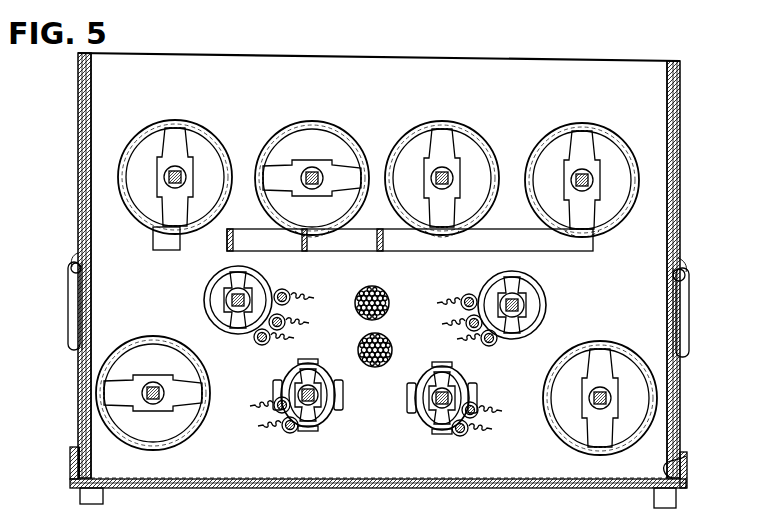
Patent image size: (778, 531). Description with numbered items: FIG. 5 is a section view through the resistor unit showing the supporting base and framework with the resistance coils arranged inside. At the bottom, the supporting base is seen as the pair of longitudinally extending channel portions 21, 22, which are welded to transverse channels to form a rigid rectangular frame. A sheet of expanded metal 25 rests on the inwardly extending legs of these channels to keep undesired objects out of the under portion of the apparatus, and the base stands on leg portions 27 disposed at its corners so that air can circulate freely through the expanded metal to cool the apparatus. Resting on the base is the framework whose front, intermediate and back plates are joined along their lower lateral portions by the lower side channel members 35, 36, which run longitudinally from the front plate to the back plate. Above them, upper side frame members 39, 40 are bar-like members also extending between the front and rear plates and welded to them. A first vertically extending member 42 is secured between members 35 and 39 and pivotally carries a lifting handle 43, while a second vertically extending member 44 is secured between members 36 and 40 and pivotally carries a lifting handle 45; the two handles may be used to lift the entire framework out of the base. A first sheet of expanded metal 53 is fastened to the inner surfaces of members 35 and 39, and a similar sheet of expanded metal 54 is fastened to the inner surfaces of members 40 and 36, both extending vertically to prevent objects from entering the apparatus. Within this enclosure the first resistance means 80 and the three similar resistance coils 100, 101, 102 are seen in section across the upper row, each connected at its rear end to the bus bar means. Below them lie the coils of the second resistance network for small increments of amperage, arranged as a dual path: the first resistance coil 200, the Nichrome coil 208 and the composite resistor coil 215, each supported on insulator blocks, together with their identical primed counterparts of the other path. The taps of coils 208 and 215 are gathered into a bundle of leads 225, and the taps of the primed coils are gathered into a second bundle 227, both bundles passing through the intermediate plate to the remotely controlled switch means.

The longitudinally extending channel portion 21 is at (686, 470).
The longitudinally extending channel portion 22 is at (70, 465).
The sheet of expanded metal 25 is at (308, 484).
The leg portion 27 is at (80, 495).
The lower side channel member 35 is at (672, 456).
The lower side channel member 36 is at (90, 472).
The upper side frame member 39 is at (680, 82).
The upper side frame member 40 is at (78, 70).
The first vertically extending member 42 is at (78, 380).
The lifting handle 43 is at (70, 344).
The second vertically extending member 44 is at (680, 368).
The lifting handle 45 is at (688, 328).
The first sheet of expanded metal 53 is at (668, 206).
The sheet of expanded metal 54 is at (82, 198).
The first resistance means 80 is at (210, 126).
The resistance coil 100 is at (338, 126).
The resistance coil 101 is at (470, 122).
The resistance coil 102 is at (642, 104).
The first resistance coil 200 is at (196, 436).
The coil 208 is at (332, 426).
The resistor coil 215 is at (200, 296).
The bundle of leads 225 is at (386, 286).
The bundle of leads 227 is at (374, 374).